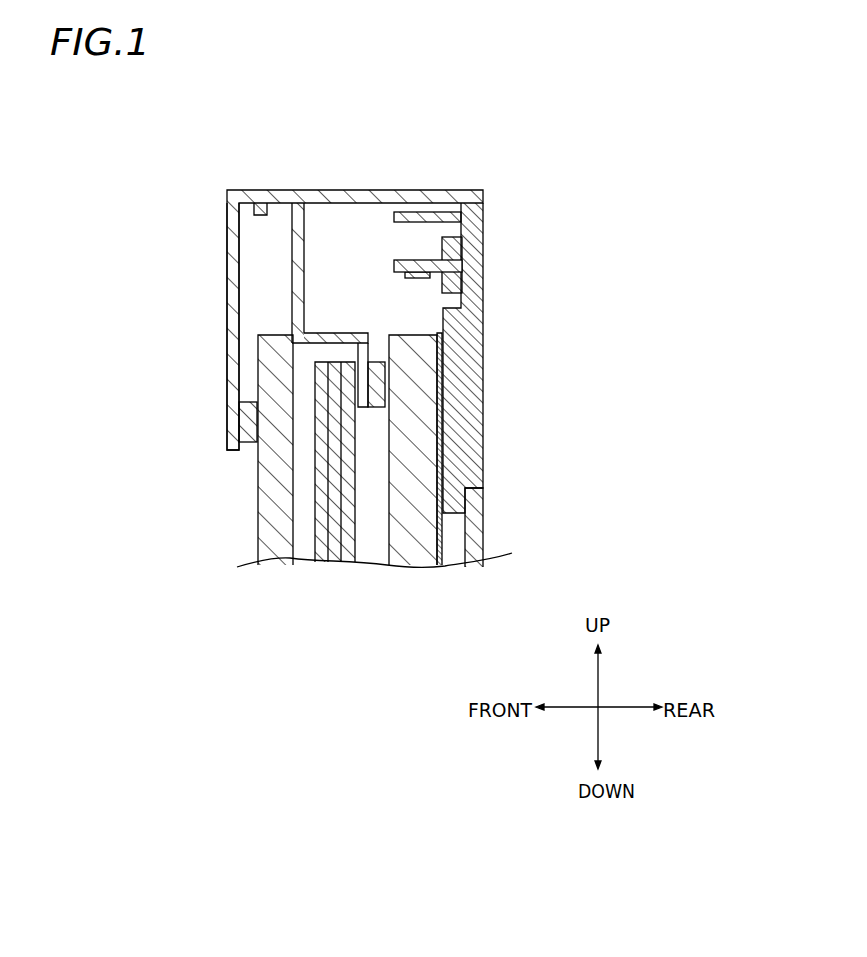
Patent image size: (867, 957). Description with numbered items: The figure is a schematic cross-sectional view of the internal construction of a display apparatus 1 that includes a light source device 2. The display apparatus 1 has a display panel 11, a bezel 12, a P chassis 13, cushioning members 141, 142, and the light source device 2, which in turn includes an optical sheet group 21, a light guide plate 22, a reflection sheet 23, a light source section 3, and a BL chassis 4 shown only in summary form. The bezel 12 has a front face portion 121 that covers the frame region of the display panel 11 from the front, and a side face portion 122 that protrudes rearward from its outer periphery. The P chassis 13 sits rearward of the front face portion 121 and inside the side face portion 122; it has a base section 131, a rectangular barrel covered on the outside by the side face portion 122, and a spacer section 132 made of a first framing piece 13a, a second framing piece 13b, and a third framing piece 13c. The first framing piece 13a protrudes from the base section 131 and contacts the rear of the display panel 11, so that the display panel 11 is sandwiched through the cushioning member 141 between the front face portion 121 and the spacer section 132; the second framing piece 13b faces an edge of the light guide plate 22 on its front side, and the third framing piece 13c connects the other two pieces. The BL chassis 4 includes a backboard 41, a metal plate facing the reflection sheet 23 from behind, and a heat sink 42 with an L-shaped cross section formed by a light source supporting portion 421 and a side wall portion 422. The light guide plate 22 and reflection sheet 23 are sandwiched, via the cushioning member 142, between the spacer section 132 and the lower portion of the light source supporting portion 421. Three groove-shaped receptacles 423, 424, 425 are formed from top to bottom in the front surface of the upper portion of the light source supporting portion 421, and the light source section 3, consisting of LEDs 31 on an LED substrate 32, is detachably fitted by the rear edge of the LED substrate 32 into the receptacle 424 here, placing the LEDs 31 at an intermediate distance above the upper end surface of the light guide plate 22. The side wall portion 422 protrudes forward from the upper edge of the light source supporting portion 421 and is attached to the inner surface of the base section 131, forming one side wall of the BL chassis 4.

The display apparatus 1 is at (562, 73).
The light source device 2 is at (385, 343).
The light source section 3 is at (499, 280).
The BL chassis 4 is at (515, 341).
The display panel 11 is at (270, 492).
The bezel 12 is at (280, 324).
The P chassis 13 is at (260, 227).
The first framing piece 13a is at (300, 292).
The second framing piece 13b is at (378, 350).
The third framing piece 13c is at (322, 335).
The optical sheet group 21 is at (325, 535).
The light guide plate 22 is at (415, 434).
The reflection sheet 23 is at (441, 468).
The LED 31 is at (465, 291).
The LED substrate 32 is at (465, 268).
The backboard 41 is at (486, 500).
The heat sink 42 is at (515, 314).
The front face portion 121 is at (227, 240).
The side face portion 122 is at (230, 188).
The base section 131 is at (342, 190).
The spacer section 132 is at (288, 257).
The cushioning member 141 is at (251, 441).
The cushioning member 142 is at (453, 408).
The light source supporting portion 421 is at (465, 366).
The side wall portion 422 is at (415, 190).
The receptacle 423 is at (462, 216).
The receptacle 424 is at (455, 240).
The receptacle 425 is at (462, 334).